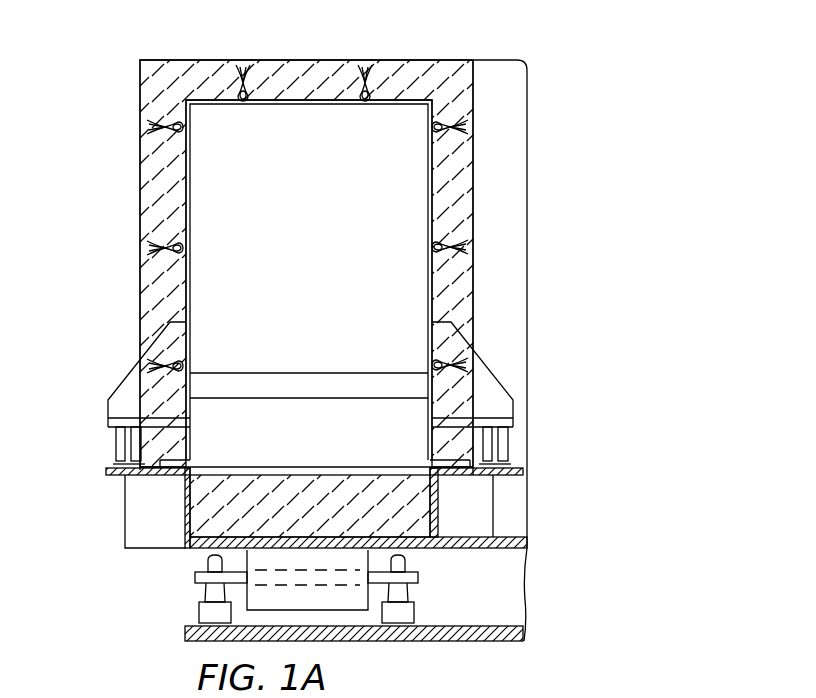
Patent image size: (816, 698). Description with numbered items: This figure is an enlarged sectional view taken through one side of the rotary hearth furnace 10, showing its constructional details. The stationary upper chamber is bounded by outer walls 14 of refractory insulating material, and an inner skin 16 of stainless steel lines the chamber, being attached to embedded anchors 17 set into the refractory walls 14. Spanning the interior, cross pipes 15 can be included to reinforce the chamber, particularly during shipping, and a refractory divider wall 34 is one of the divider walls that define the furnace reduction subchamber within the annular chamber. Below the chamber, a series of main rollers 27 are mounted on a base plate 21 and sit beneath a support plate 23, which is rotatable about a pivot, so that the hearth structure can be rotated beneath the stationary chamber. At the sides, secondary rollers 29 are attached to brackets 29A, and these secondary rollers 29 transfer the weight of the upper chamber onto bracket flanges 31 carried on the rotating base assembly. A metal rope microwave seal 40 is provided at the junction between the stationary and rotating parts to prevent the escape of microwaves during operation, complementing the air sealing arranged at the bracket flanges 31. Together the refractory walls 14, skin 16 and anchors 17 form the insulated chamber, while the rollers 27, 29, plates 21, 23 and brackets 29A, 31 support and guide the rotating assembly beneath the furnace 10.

The rotary hearth furnace 10 is at (503, 98).
The outer walls 14 is at (140, 180).
The cross pipes 15 is at (300, 372).
The inner skin 16 is at (293, 105).
The embedded anchors 17 is at (233, 83).
The base plate 21 is at (203, 636).
The support plate 23 is at (460, 548).
The main rollers 27 is at (183, 596).
The secondary rollers 29 is at (105, 441).
The brackets 29A is at (118, 383).
The bracket flanges 31 is at (116, 478).
The refractory divider wall 34 is at (447, 460).
The metal rope microwave seal 40 is at (462, 478).